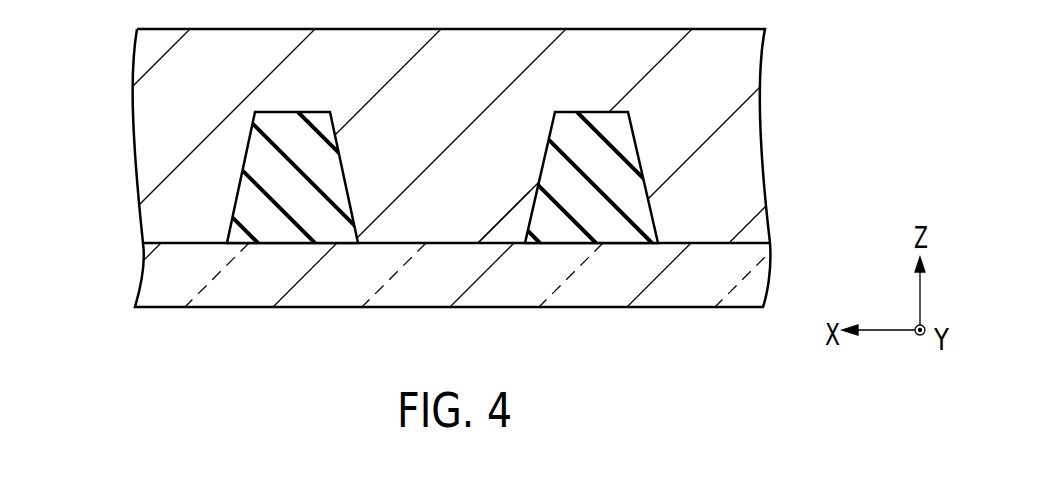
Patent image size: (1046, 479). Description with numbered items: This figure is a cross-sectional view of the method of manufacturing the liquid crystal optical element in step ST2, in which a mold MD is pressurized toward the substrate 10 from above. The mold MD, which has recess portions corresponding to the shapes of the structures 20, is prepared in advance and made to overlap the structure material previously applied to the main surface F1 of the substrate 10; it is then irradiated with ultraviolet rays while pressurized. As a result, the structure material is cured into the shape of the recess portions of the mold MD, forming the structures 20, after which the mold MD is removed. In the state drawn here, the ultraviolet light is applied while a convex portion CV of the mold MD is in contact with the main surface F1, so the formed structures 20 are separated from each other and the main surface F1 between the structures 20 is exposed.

The step ST2 is at (95, 72).
The mold MD is at (757, 133).
The main surface F1 is at (748, 243).
The substrate 10 is at (766, 273).
The structures 20 is at (280, 227).
The convex portion CV is at (443, 228).